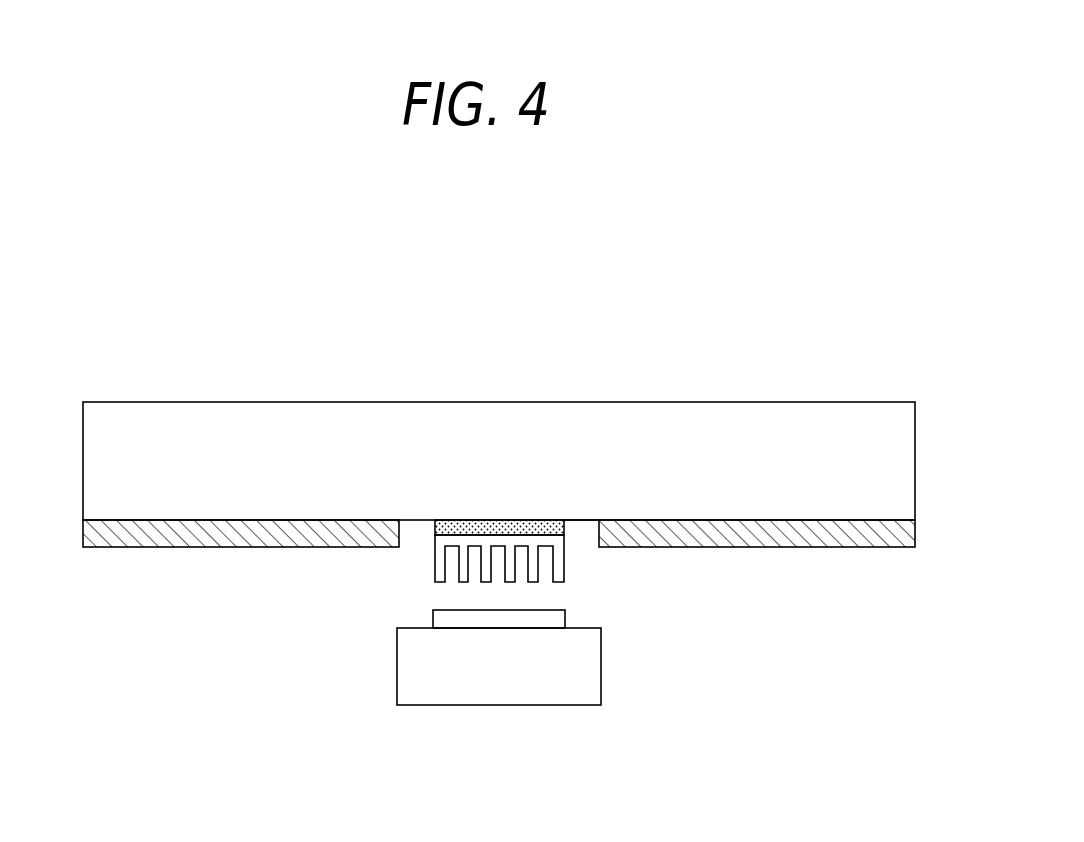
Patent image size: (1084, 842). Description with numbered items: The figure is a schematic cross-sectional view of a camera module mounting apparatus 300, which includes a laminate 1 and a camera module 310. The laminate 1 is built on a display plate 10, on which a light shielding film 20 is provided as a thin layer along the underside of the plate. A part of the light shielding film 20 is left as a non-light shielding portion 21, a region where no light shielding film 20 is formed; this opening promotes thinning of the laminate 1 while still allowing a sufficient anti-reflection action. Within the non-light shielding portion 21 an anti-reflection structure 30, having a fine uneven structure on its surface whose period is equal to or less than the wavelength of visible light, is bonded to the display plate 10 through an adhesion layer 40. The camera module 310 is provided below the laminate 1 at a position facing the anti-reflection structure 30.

The camera module mounting apparatus 300 is at (652, 316).
The laminate 1 is at (778, 390).
The display plate 10 is at (510, 462).
The light shielding film 20 is at (760, 538).
The non-light shielding portion 21 is at (582, 532).
The anti-reflection structure 30 is at (437, 547).
The adhesion layer 40 is at (478, 525).
The camera module 310 is at (505, 685).